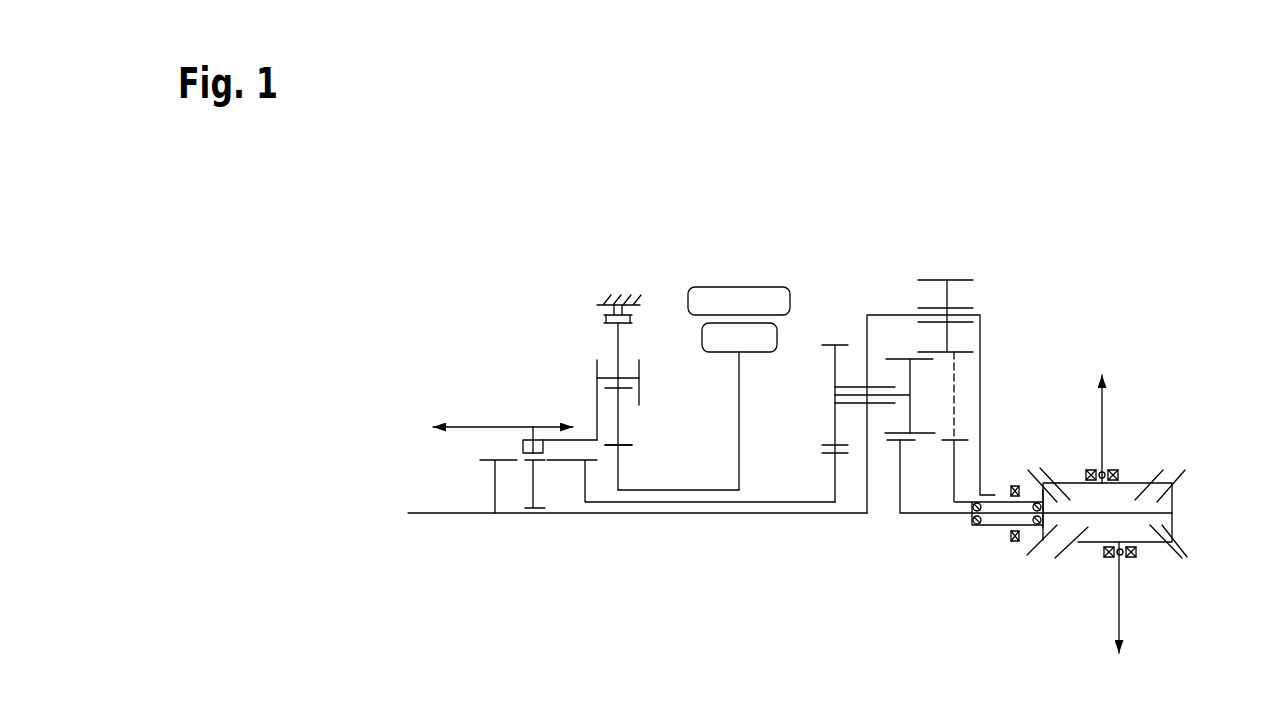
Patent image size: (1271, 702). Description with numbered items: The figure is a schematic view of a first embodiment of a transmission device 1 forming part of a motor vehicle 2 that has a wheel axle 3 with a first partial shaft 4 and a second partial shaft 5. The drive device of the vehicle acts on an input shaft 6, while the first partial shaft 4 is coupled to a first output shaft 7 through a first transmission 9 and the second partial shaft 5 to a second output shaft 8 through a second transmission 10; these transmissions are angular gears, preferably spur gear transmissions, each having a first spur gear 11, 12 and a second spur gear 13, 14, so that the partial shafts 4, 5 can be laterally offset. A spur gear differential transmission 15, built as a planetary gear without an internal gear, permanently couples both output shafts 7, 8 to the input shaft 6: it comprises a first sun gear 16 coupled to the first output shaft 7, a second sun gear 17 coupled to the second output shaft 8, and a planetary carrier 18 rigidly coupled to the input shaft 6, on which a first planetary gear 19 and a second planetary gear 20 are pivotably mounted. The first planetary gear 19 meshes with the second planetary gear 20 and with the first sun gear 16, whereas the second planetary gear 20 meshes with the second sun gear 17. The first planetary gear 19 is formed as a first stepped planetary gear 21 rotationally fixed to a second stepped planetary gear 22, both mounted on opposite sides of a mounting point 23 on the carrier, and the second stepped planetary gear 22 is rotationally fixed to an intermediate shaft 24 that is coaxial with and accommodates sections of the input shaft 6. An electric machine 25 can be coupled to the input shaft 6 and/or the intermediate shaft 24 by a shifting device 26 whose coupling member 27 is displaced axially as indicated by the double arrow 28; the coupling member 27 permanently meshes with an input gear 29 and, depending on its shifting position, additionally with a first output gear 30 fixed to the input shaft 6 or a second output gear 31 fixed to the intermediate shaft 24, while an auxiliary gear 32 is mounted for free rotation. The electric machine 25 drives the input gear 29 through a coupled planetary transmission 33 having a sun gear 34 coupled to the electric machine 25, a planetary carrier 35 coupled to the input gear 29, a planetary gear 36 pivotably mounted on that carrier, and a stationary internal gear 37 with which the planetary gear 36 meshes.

The transmission device 1 is at (998, 200).
The motor vehicle 2 is at (1095, 250).
The wheel axle 3 is at (1113, 358).
The first partial shaft 4 is at (1118, 617).
The second partial shaft 5 is at (1103, 420).
The input shaft 6 is at (422, 517).
The first output shaft 7 is at (1063, 465).
The second output shaft 8 is at (993, 527).
The first transmission 9 is at (1180, 497).
The second transmission 10 is at (1098, 453).
The first spur gear 11 is at (1178, 547).
The first spur gear 12 is at (1038, 550).
The second spur gear 13 is at (1168, 562).
The second spur gear 14 is at (1155, 470).
The spur gear differential transmission 15 is at (990, 305).
The first sun gear 16 is at (893, 443).
The second sun gear 17 is at (950, 442).
The planetary carrier 18 is at (907, 315).
The first planetary gear 19 is at (923, 531).
The second planetary gear 20 is at (955, 280).
The first stepped planetary gear 21 is at (918, 437).
The second stepped planetary gear 22 is at (845, 343).
The mounting point 23 is at (868, 385).
The intermediate shaft 24 is at (722, 517).
The electric machine 25 is at (727, 277).
The shifting device 26 is at (495, 405).
The coupling member 27 is at (516, 427).
The double arrow 28 is at (438, 422).
The input gear 29 is at (580, 430).
The first output gear 30 is at (479, 463).
The second output gear 31 is at (582, 465).
The auxiliary gear 32 is at (546, 510).
The planetary transmission 33 is at (581, 277).
The sun gear 34 is at (625, 448).
The planetary carrier 35 is at (641, 388).
The planetary gear 36 is at (612, 323).
The internal gear 37 is at (620, 303).